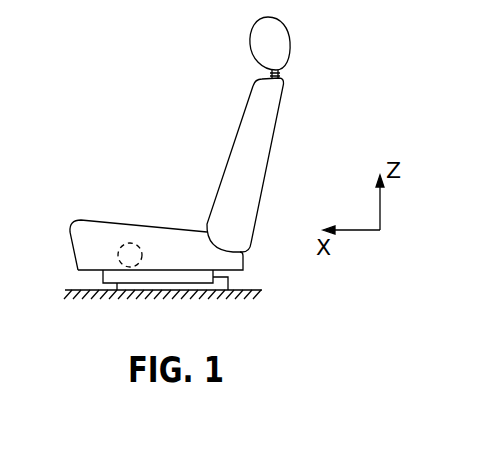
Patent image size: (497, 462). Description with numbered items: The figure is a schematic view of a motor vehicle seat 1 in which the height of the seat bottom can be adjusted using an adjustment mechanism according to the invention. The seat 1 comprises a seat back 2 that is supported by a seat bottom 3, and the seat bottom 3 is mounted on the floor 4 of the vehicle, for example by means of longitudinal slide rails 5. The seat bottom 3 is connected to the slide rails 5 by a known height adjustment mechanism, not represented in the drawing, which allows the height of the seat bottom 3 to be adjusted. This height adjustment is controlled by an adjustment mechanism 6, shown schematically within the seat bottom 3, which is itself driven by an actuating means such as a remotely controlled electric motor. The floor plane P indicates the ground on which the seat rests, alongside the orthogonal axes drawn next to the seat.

The motor vehicle seat 1 is at (213, 177).
The seat back 2 is at (115, 236).
The seat bottom 3 is at (247, 192).
The floor 4 is at (160, 275).
The longitudinal slide rails 5 is at (275, 40).
The adjustment mechanism 6 is at (132, 253).
The floor plane P is at (257, 290).